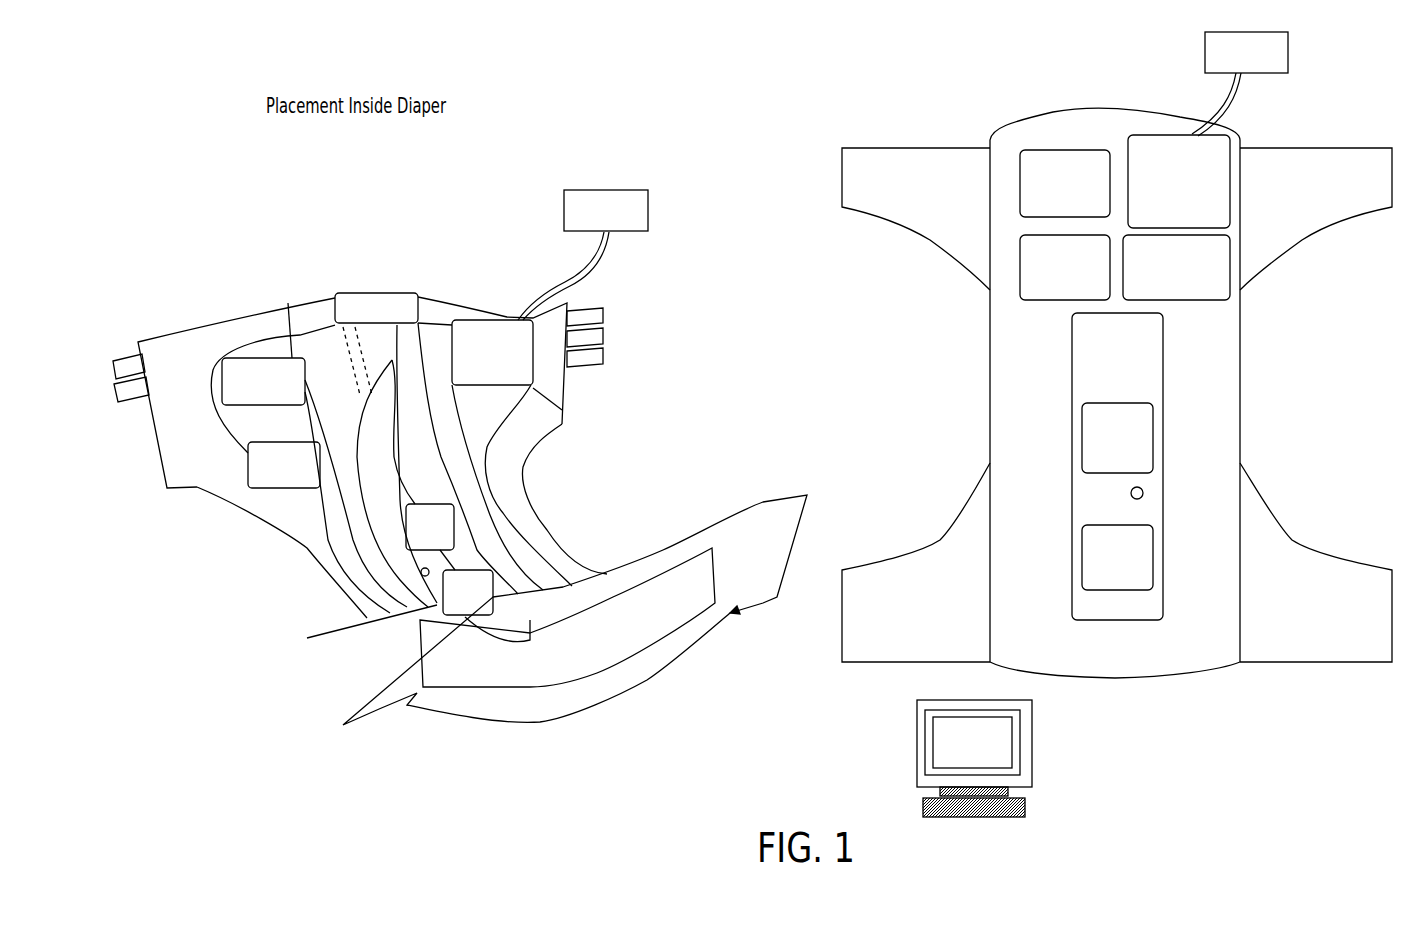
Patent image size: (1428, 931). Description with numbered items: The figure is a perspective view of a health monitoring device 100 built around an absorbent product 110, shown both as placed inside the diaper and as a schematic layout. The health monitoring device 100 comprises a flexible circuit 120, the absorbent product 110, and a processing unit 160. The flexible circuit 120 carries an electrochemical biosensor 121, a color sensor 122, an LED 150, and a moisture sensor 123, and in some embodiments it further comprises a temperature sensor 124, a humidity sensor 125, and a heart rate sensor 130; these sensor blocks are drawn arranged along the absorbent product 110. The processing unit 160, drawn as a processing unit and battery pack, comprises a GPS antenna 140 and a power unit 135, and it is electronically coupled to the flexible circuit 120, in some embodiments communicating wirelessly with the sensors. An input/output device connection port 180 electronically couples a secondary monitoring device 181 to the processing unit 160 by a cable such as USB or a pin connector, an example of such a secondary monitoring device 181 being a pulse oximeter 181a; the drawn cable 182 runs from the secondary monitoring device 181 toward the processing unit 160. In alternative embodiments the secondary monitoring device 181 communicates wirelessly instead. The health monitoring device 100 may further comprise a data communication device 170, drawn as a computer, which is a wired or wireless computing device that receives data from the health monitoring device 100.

The health monitoring device 100 is at (895, 123).
The absorbent product 110 is at (1212, 652).
The flexible circuit 120 is at (1083, 502).
The electrochemical biosensor 121 is at (1080, 563).
The color sensor 122 is at (1080, 435).
The moisture sensor 123 is at (1083, 343).
The temperature sensor 124 is at (1215, 253).
The humidity sensor 125 is at (1227, 283).
The heart rate sensor 130 is at (1008, 243).
The power unit 135 is at (1193, 212).
The GPS antenna 140 is at (1040, 150).
The LED 150 is at (1143, 497).
The processing unit 160 is at (1148, 140).
The data communication device 170 is at (1033, 747).
The input/output device connection port 180 is at (1185, 128).
The secondary monitoring device 181 is at (903, 176).
The pulse oximeter 181a is at (903, 176).
The cable 182 is at (1212, 126).